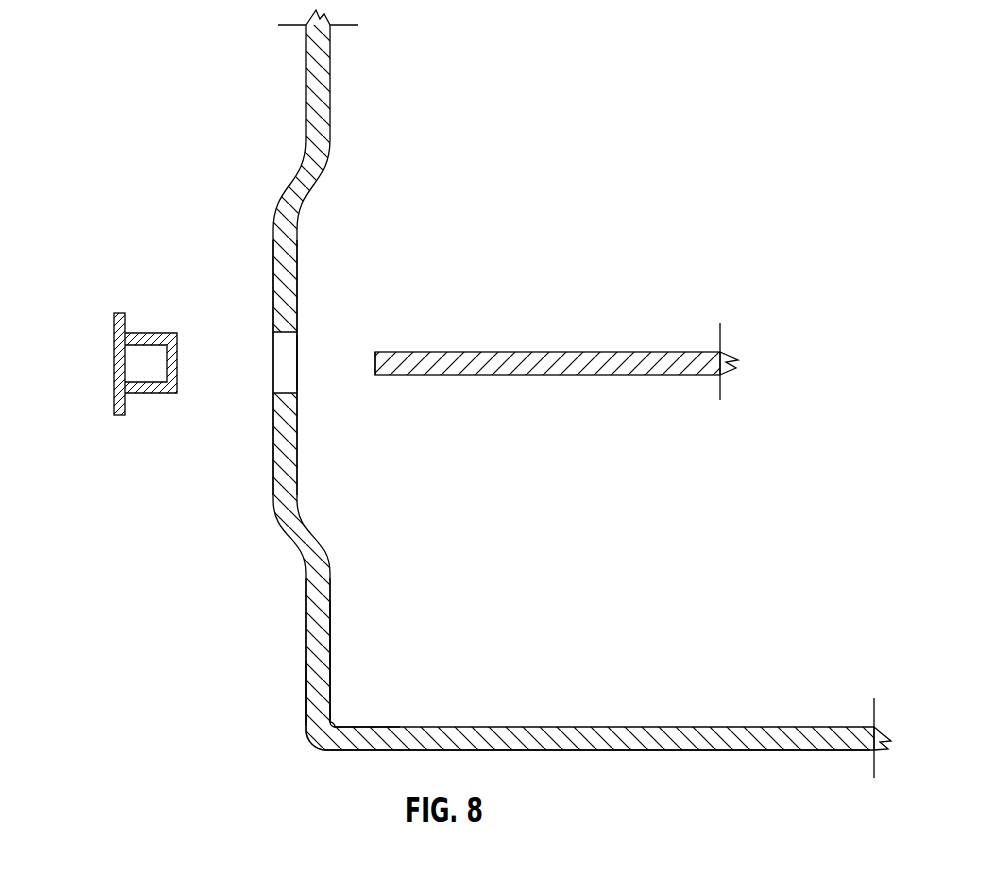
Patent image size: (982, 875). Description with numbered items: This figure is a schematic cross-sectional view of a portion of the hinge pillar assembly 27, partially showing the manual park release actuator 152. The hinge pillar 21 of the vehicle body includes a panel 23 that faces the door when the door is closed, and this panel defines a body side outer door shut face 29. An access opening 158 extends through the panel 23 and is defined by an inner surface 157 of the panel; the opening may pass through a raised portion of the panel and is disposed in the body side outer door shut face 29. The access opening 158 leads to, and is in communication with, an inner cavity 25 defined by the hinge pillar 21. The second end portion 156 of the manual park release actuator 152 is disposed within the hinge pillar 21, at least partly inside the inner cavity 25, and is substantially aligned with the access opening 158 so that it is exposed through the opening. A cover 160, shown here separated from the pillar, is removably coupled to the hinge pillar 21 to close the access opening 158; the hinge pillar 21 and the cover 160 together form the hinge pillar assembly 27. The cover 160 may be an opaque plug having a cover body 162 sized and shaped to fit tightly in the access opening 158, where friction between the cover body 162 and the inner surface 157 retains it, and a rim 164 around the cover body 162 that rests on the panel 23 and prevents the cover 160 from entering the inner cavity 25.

The hinge pillar assembly 27 is at (219, 72).
The panel 23 is at (272, 462).
The access opening 158 is at (275, 347).
The inner surface 157 is at (289, 392).
The body side outer door shut face 29 is at (307, 600).
The inner cavity 25 is at (331, 615).
The hinge pillar 21 is at (307, 665).
The manual park release actuator 152 is at (566, 352).
The second end portion 156 is at (393, 352).
The cover 160 is at (99, 358).
The cover body 162 is at (137, 396).
The rim 164 is at (112, 400).